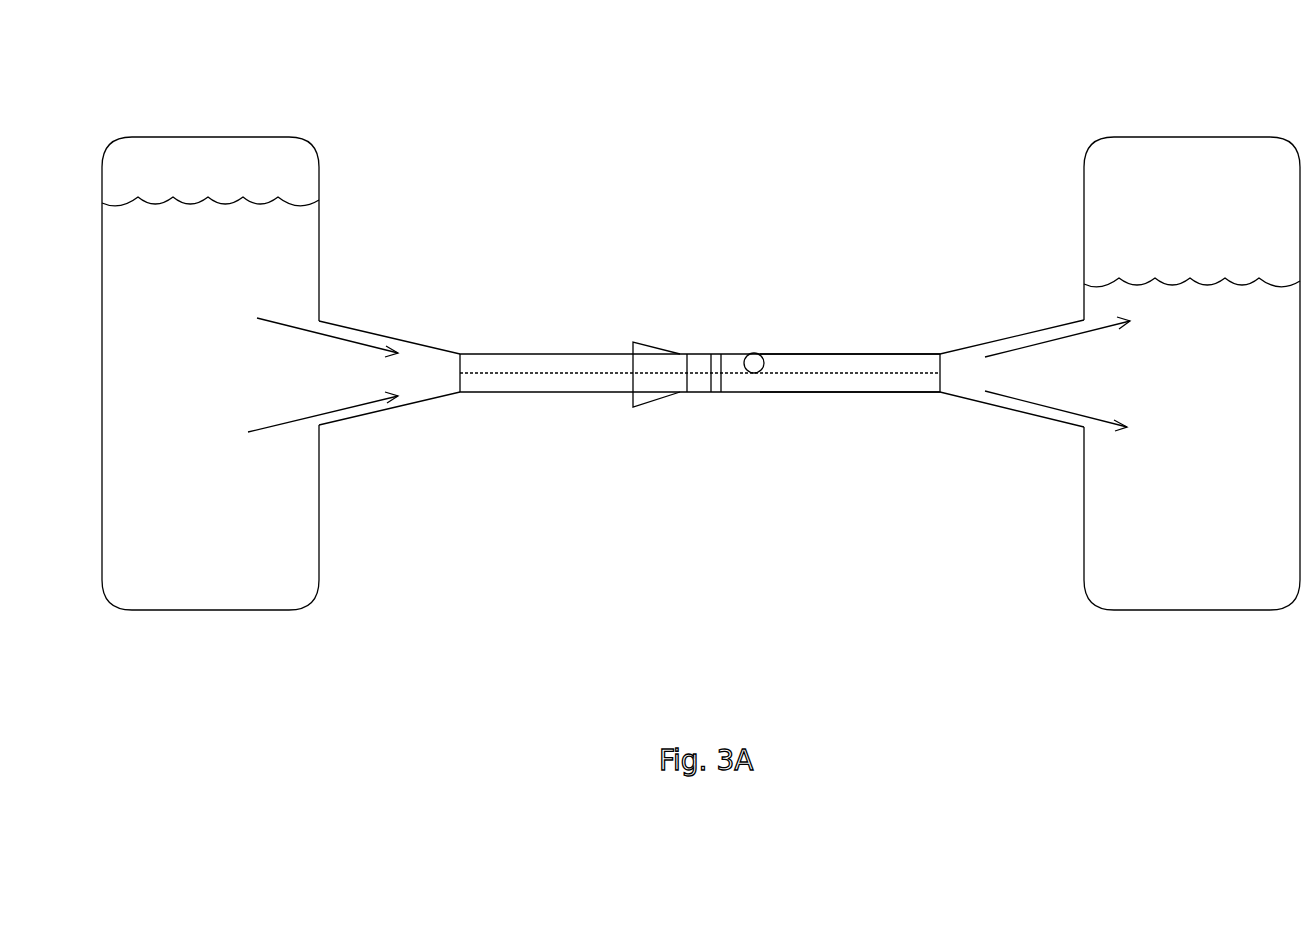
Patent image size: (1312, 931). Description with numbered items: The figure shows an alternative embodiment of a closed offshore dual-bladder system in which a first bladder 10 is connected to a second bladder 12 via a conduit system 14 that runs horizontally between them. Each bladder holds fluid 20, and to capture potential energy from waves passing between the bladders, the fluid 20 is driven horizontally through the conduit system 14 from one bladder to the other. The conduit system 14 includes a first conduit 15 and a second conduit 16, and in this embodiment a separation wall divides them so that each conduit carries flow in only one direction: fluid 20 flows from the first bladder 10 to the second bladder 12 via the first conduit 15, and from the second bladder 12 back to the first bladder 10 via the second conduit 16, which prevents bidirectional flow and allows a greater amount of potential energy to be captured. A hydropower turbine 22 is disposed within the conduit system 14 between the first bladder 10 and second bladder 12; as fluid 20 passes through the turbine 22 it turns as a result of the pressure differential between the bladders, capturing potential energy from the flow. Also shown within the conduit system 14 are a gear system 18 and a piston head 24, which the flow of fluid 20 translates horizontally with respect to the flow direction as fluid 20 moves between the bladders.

The first bladder 10 is at (195, 137).
The second bladder 12 is at (1182, 137).
The conduit system 14 is at (555, 347).
The first conduit 15 is at (518, 381).
The second conduit 16 is at (823, 365).
The gear system 18 is at (762, 372).
The fluid 20 is at (222, 528).
The hydropower turbine 22 is at (655, 346).
The piston head 24 is at (716, 392).